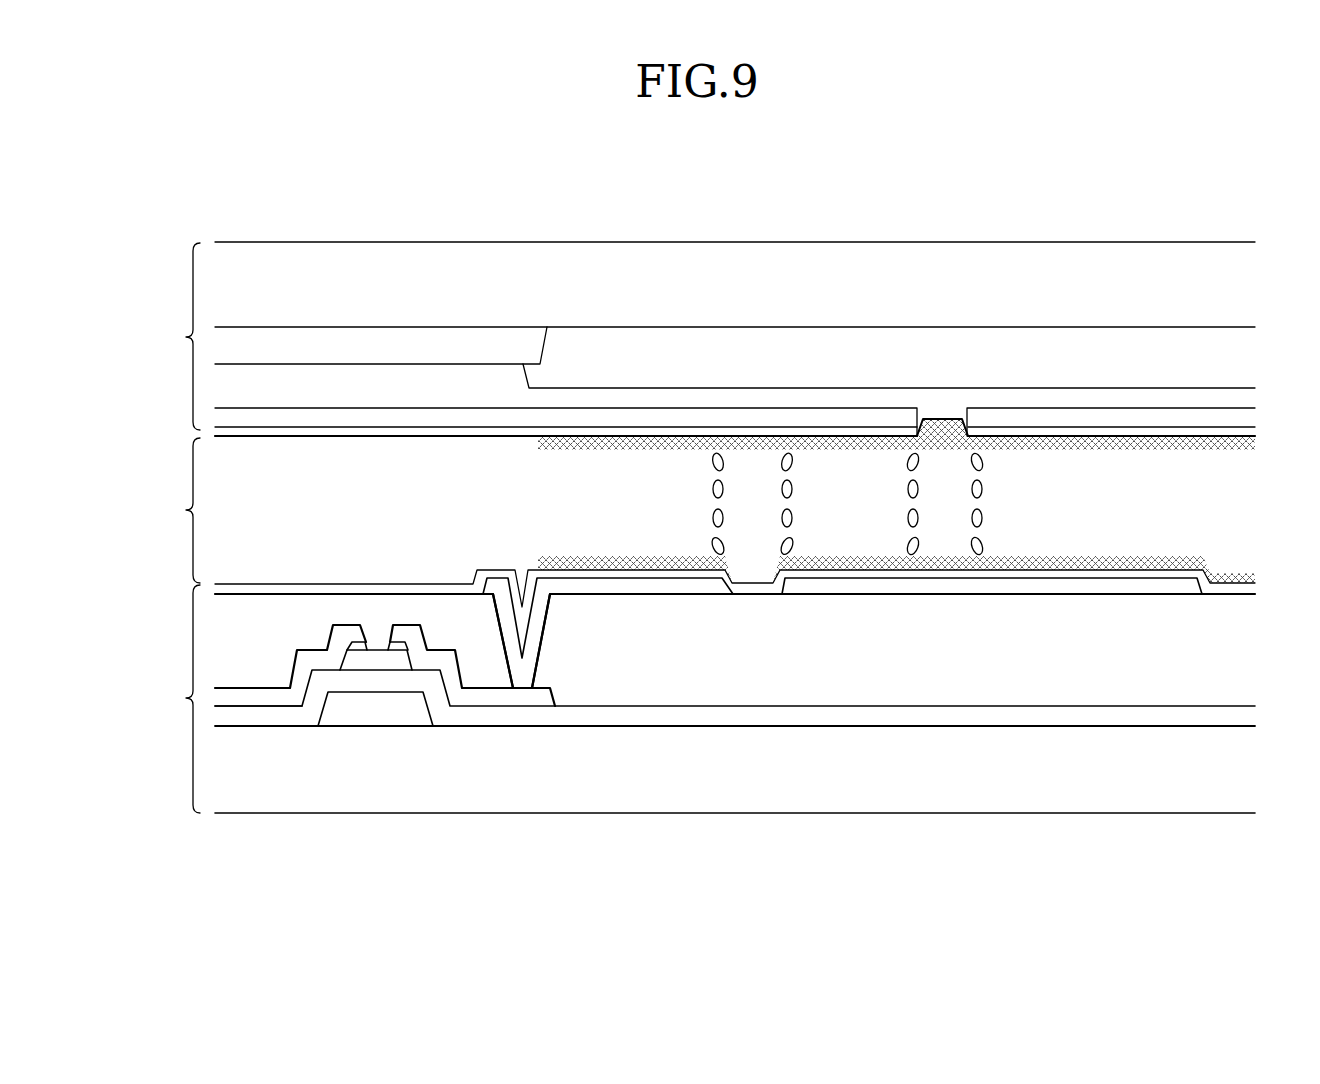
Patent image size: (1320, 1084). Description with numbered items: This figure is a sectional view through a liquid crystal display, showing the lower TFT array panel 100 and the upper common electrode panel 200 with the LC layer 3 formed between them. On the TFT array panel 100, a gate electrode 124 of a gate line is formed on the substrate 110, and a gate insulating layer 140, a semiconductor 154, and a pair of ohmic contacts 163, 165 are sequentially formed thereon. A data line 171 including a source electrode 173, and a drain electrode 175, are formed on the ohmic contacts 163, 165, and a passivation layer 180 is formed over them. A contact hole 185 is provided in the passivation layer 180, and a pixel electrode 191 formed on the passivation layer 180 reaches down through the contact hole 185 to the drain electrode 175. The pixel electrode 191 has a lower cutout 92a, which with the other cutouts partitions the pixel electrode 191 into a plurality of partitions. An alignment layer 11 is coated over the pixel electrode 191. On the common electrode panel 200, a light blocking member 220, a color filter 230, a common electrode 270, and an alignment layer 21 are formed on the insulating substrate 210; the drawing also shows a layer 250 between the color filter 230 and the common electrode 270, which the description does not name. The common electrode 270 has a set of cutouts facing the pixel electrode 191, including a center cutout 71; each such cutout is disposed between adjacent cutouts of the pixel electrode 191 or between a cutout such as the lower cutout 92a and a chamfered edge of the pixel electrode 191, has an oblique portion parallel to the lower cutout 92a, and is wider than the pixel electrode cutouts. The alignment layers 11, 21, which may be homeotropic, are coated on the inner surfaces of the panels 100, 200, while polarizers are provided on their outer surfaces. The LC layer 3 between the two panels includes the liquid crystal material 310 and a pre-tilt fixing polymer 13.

The common electrode panel 200 is at (173, 336).
The insulating substrate 210 is at (712, 278).
The light blocking member 220 is at (465, 343).
The color filter 230 is at (841, 357).
The overcoat 250 is at (320, 387).
The common electrode 270 is at (633, 420).
The center cutout 71 is at (923, 417).
The alignment layer 21 is at (1255, 431).
The LC layer 3 is at (185, 510).
The pre-tilt fixing polymer 13 is at (1163, 557).
The liquid crystal material 310 is at (982, 488).
The TFT array panel 100 is at (173, 699).
The substrate 110 is at (1027, 780).
The gate electrode 124 is at (353, 710).
The gate insulating layer 140 is at (1108, 718).
The semiconductor 154 is at (393, 663).
The ohmic contact 163 is at (353, 643).
The ohmic contact 165 is at (400, 643).
The data line 171 is at (253, 697).
The source electrode 173 is at (322, 665).
The drain electrode 175 is at (518, 698).
The passivation layer 180 is at (1180, 650).
The contact hole 185 is at (497, 613).
The pixel electrode 191 is at (625, 592).
The lower cutout 92a is at (733, 590).
The alignment layer 11 is at (1255, 588).